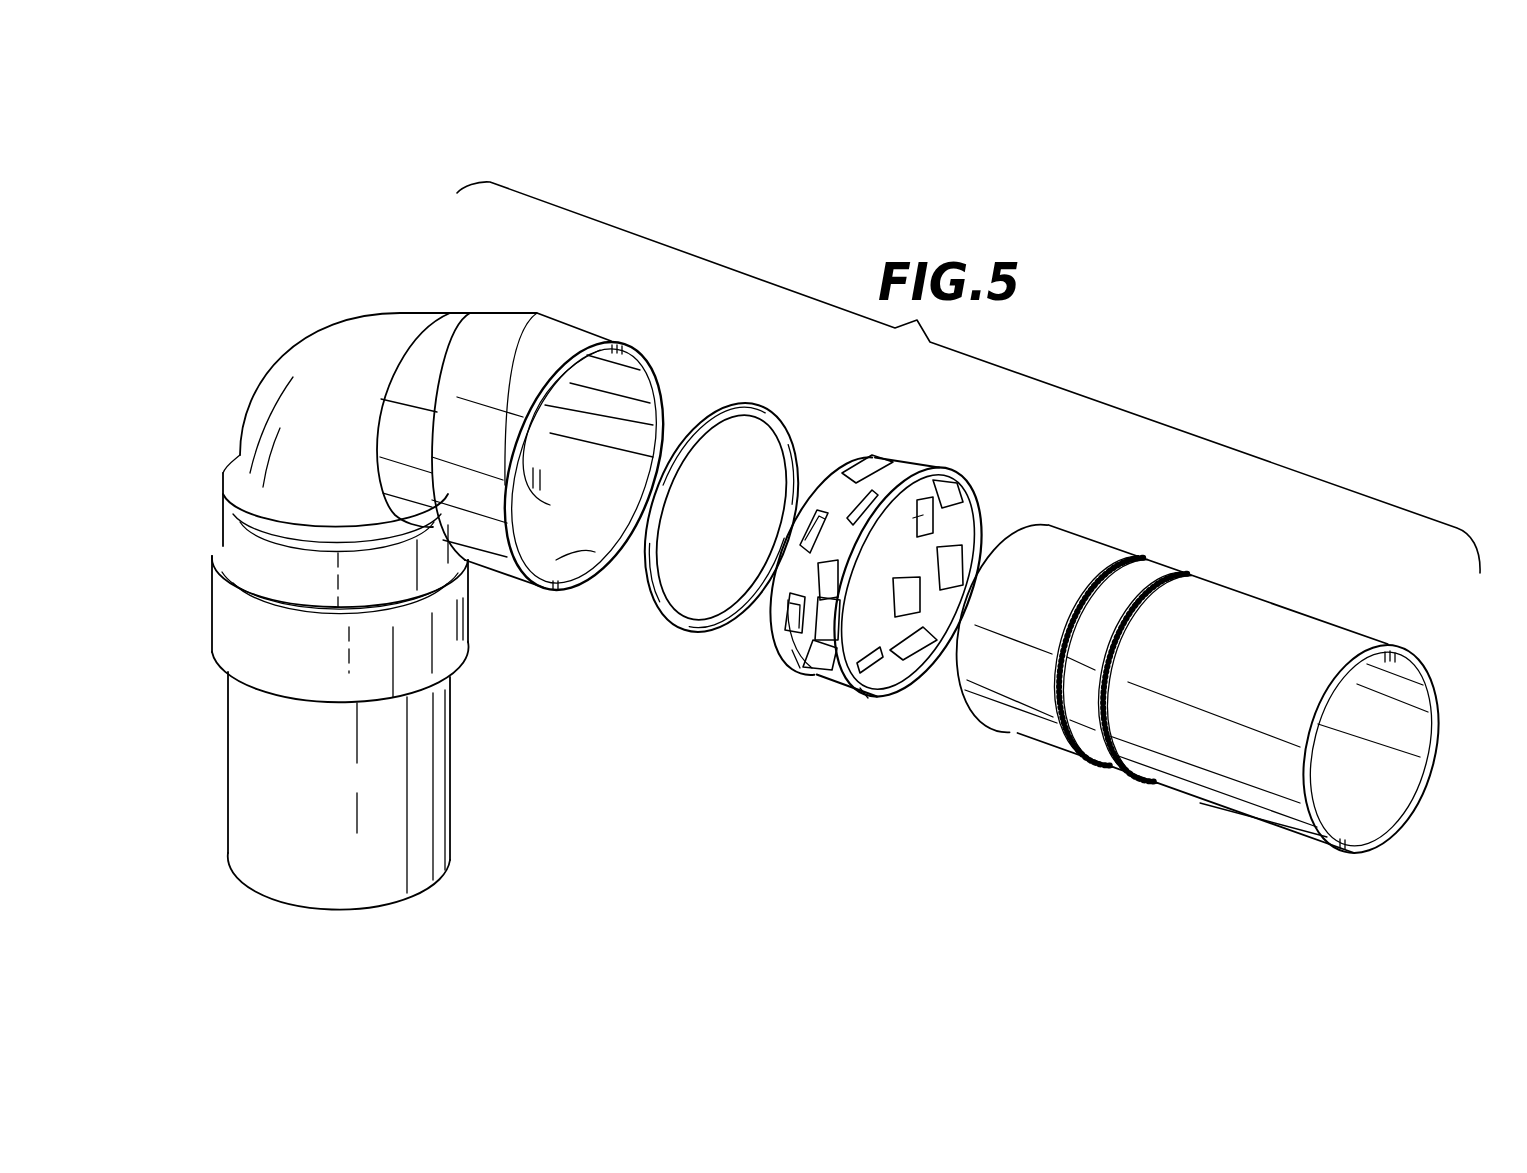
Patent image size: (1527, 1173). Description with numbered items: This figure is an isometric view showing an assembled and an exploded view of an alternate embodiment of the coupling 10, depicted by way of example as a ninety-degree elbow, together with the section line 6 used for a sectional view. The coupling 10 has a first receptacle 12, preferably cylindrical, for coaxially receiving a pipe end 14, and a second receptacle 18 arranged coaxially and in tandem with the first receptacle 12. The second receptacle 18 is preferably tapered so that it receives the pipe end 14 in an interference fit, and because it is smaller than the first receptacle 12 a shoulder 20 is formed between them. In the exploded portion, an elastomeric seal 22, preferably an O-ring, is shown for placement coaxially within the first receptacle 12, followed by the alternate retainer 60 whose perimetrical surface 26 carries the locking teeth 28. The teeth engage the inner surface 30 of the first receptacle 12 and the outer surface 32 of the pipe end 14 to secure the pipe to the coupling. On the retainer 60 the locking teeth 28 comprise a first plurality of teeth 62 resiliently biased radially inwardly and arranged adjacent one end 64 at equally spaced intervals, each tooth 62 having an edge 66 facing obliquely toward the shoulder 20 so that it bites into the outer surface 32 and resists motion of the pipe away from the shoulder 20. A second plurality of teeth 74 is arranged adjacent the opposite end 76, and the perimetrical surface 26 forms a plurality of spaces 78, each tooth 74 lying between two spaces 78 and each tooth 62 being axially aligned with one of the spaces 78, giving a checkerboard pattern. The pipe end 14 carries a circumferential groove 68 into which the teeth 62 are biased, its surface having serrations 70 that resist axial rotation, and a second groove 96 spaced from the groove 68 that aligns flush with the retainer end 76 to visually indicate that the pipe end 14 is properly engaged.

The section line 6- 6 is at (203, 345).
The coupling 10 is at (350, 335).
The first receptacle 12 is at (565, 333).
The pipe end 14 is at (804, 715).
The second receptacle 18 is at (472, 320).
The shoulder 20 is at (563, 403).
The elastomeric seal 22 is at (758, 407).
The perimetrical surface 26 is at (885, 581).
The locking teeth 28 is at (910, 680).
The inner surface 30 is at (573, 555).
The outer surface 32 is at (1032, 732).
The alternate retainer 60 is at (807, 680).
The first plurality of teeth 62 is at (860, 470).
The end of the retainer 64 is at (795, 652).
The edge 66 is at (913, 518).
The circumferential groove 68 is at (1068, 760).
The serrations 70 is at (1128, 556).
The second plurality of teeth 74 is at (958, 500).
The end of the retainer 76 is at (866, 698).
The spaces 78 is at (935, 608).
The second groove 96 is at (1170, 577).